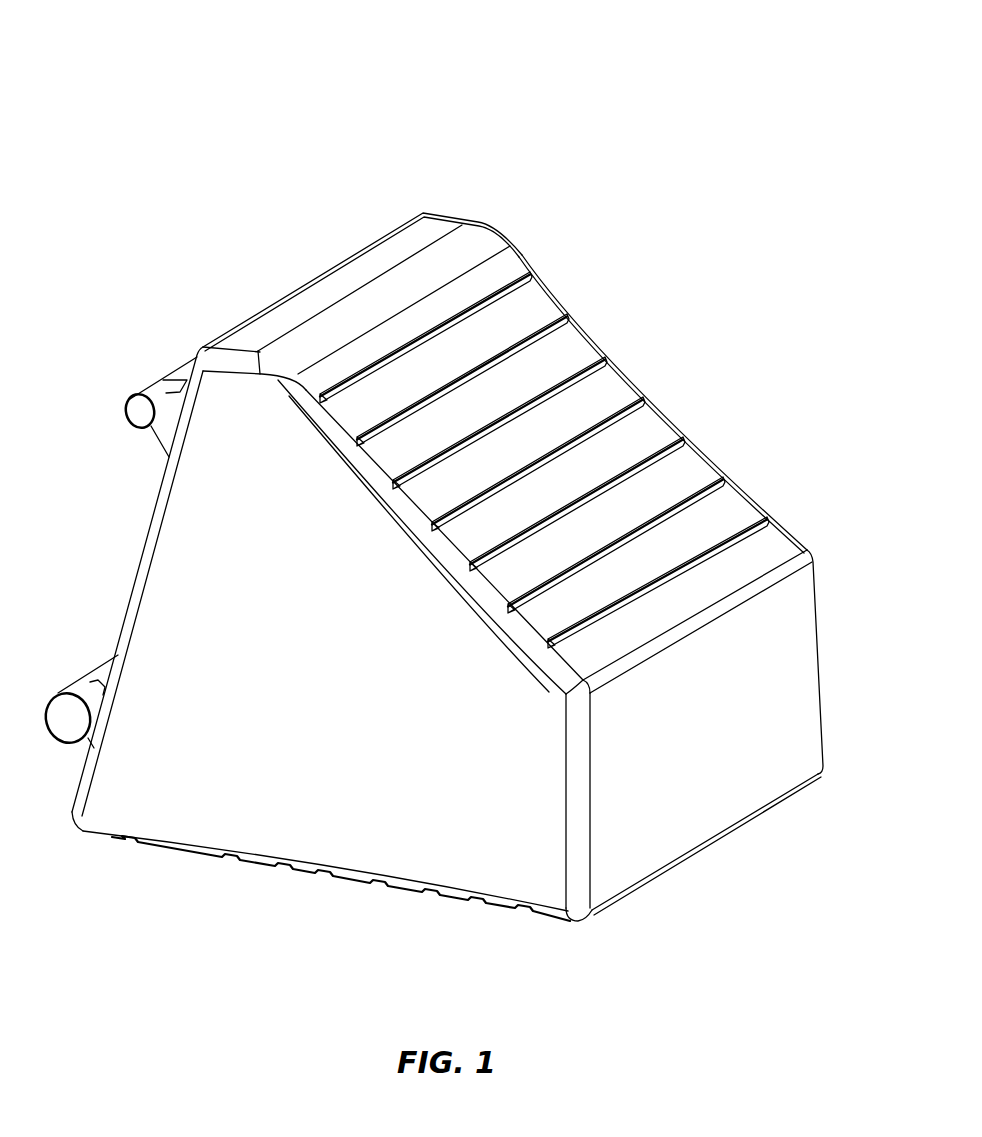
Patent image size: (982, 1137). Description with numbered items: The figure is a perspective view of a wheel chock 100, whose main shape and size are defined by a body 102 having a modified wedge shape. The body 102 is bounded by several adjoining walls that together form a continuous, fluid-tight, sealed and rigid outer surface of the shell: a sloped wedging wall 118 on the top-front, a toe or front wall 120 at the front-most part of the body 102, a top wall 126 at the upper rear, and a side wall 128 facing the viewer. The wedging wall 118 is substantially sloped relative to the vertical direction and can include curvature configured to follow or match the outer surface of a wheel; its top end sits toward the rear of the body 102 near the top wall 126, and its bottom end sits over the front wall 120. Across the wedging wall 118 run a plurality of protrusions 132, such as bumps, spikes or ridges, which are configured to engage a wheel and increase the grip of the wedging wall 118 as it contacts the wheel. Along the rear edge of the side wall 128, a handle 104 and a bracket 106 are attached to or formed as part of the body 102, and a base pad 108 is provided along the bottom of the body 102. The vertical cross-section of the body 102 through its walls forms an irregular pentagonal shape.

The wheel chock 100 is at (594, 128).
The body 102 is at (779, 640).
The handle 104 is at (141, 409).
The bracket 106 is at (67, 712).
The base pad 108 is at (378, 890).
The wedging wall 118 is at (613, 392).
The front wall 120 is at (718, 765).
The top wall 126 is at (435, 228).
The side wall 128 is at (170, 560).
The protrusions 132 is at (594, 362).